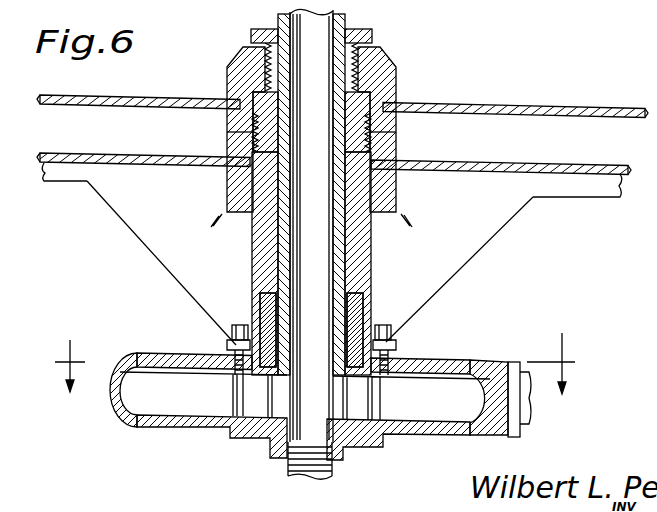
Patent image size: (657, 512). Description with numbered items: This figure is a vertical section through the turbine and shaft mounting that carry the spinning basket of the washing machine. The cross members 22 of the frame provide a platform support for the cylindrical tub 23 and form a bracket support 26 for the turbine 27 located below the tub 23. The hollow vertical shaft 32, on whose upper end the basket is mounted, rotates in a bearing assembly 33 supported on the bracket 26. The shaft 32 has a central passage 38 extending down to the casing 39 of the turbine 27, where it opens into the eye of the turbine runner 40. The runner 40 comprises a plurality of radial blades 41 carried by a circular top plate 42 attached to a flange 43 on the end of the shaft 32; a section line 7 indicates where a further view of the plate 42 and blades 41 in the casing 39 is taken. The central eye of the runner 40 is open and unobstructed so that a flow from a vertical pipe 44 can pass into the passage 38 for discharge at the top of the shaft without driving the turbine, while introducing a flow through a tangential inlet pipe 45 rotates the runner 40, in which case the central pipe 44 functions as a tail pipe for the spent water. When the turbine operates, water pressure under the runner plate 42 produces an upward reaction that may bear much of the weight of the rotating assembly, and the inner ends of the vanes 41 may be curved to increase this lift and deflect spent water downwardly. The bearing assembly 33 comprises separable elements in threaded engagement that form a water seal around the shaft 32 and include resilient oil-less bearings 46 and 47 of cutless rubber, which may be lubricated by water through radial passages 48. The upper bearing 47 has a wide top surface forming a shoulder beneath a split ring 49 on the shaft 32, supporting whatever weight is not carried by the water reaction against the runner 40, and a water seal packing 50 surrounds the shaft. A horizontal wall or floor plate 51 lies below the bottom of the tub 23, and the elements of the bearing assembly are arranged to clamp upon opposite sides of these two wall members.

The section line 7— 7 is at (314, 363).
The cross members 22 is at (67, 172).
The cylindrical tub 23 is at (582, 109).
The bracket support 26 is at (167, 239).
The turbine 27 is at (128, 423).
The hollow vertical shaft 32 is at (338, 13).
The bearing assembly 33 is at (316, 170).
The central passage 38 is at (313, 40).
The casing 39 is at (144, 355).
The turbine runner 40 is at (210, 353).
The radial blades 41 is at (261, 408).
The circular top plate 42 is at (429, 370).
The flange 43 is at (368, 362).
The vertical pipe 44 is at (300, 474).
The tangential inlet pipe 45 is at (528, 413).
The resilient oil-less bearing 46 is at (260, 300).
The upper bearing 47 is at (247, 140).
The radial passages 48 is at (358, 178).
The split ring 49 is at (367, 100).
The water seal packing 50 is at (376, 63).
The horizontal wall or floor plate 51 is at (567, 166).